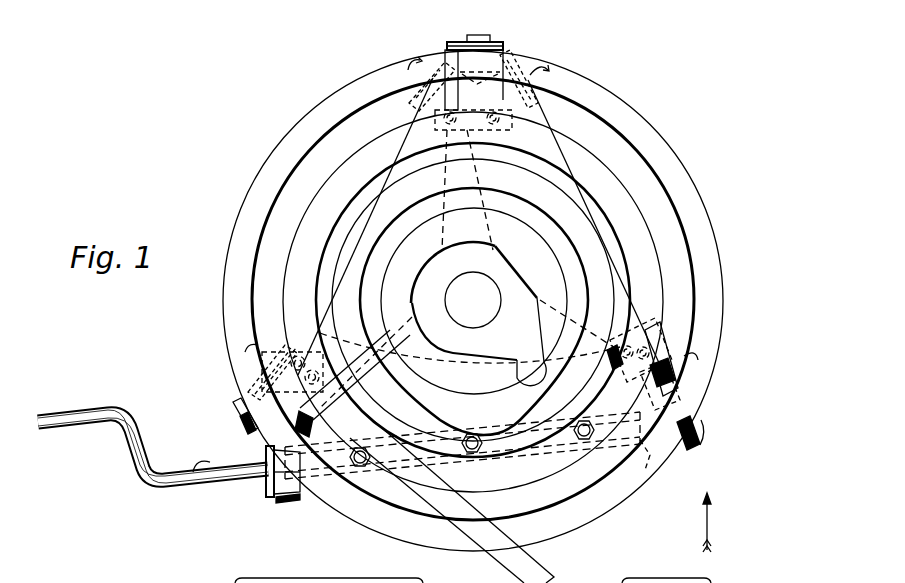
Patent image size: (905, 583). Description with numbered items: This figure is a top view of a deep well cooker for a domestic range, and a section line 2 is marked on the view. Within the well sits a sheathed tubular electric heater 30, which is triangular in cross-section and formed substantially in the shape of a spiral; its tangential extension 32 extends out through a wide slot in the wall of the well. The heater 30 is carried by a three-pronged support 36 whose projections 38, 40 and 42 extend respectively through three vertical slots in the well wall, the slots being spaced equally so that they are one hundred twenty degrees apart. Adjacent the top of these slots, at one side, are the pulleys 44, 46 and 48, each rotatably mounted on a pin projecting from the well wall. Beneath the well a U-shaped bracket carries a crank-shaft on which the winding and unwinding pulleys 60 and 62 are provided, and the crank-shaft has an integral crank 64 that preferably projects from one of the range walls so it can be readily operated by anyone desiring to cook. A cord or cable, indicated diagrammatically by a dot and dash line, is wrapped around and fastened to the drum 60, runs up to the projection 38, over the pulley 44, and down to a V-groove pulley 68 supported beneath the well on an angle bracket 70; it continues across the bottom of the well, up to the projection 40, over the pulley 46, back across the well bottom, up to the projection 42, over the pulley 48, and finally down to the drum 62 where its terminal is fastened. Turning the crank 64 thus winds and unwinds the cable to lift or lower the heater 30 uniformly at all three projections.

The section line 2- 2 is at (716, 522).
The sheathed tubular electric heater 30 is at (520, 360).
The tangential extension 32 is at (540, 560).
The three-pronged support 36 is at (437, 300).
The projection 38 is at (266, 449).
The projection 40 is at (445, 47).
The projection 42 is at (707, 393).
The pulley 44 is at (233, 403).
The pulley 46 is at (504, 43).
The pulley 48 is at (687, 410).
The winding pulley 60 is at (292, 498).
The unwinding pulley 62 is at (640, 457).
The crank 64 is at (62, 430).
The V-groove pulley 68 is at (260, 365).
The angle bracket 70 is at (323, 344).